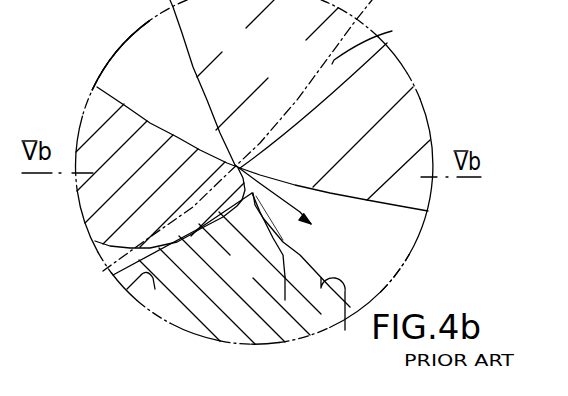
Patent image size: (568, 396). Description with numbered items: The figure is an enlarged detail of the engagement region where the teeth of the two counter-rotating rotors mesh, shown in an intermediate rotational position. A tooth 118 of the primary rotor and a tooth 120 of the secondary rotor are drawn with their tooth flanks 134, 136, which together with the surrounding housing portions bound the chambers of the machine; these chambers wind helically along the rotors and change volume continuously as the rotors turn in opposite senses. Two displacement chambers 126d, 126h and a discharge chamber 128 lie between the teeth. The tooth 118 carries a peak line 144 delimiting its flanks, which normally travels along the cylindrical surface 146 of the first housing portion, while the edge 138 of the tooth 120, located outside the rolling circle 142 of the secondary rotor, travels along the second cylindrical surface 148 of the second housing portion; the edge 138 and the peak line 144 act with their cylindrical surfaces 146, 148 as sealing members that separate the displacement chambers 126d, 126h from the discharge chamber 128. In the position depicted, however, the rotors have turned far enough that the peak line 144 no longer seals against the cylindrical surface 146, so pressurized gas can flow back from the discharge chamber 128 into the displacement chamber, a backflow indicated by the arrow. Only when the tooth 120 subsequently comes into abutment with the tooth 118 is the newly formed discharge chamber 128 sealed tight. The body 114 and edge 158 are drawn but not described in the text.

The body 114 is at (222, 330).
The tooth of primary rotor 118 is at (300, 64).
The tooth of secondary rotor 120 is at (150, 158).
The displacement chamber 126d is at (384, 265).
The displacement chamber 126h is at (115, 259).
The discharge chamber 128 is at (143, 48).
The tooth flank 134 is at (342, 198).
The tooth flank 136 is at (190, 48).
The edge of secondary rotor tooth 138 is at (283, 250).
The rolling circle of secondary rotor 142 is at (392, 31).
The peak line 144 is at (245, 165).
The cylindrical surface of first housing portion 146 is at (345, 330).
The second cylindrical surface of second housing portion 148 is at (155, 289).
The edge 158 is at (285, 300).